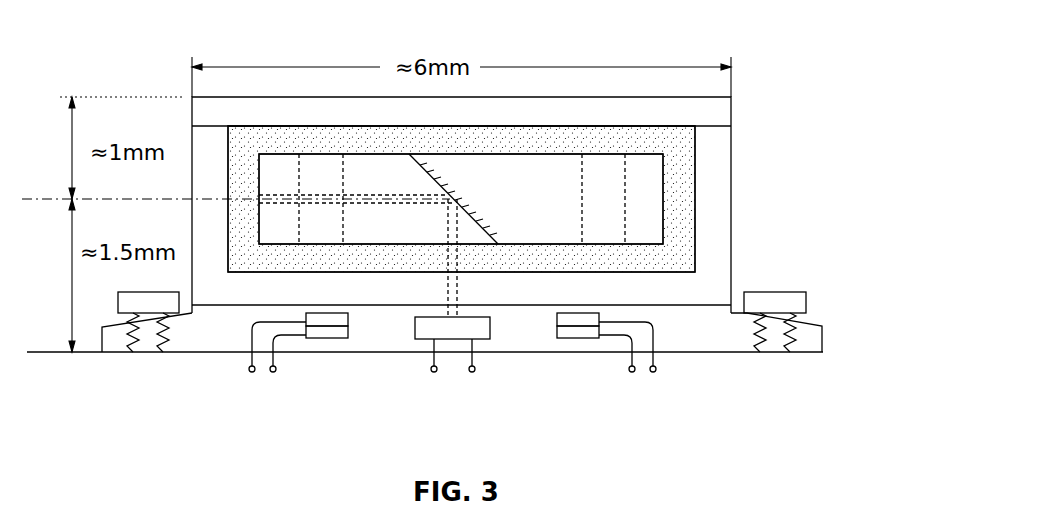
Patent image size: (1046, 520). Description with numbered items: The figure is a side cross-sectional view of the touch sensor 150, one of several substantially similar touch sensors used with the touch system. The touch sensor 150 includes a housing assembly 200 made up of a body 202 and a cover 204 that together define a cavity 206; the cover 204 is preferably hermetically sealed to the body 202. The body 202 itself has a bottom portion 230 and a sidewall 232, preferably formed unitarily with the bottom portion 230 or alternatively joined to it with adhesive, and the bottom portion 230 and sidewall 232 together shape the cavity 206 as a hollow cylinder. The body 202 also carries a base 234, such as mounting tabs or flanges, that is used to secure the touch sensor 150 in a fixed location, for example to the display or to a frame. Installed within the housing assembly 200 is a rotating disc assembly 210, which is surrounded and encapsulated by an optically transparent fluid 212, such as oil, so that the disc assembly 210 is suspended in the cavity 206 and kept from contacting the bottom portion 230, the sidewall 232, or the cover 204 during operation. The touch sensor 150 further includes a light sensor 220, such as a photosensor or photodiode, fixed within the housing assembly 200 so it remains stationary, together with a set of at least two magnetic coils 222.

The touch sensor 150 is at (805, 60).
The housing assembly 200 is at (766, 203).
The body 202 is at (812, 340).
The cover 204 is at (716, 114).
The cavity 206 is at (683, 147).
The rotating disc assembly 210 is at (561, 204).
The optically transparent fluid 212 is at (678, 262).
The light sensor 220 is at (453, 345).
The magnetic coils 222 is at (324, 342).
The bottom portion 230 is at (390, 290).
The sidewall 232 is at (717, 200).
The base 234 is at (374, 340).